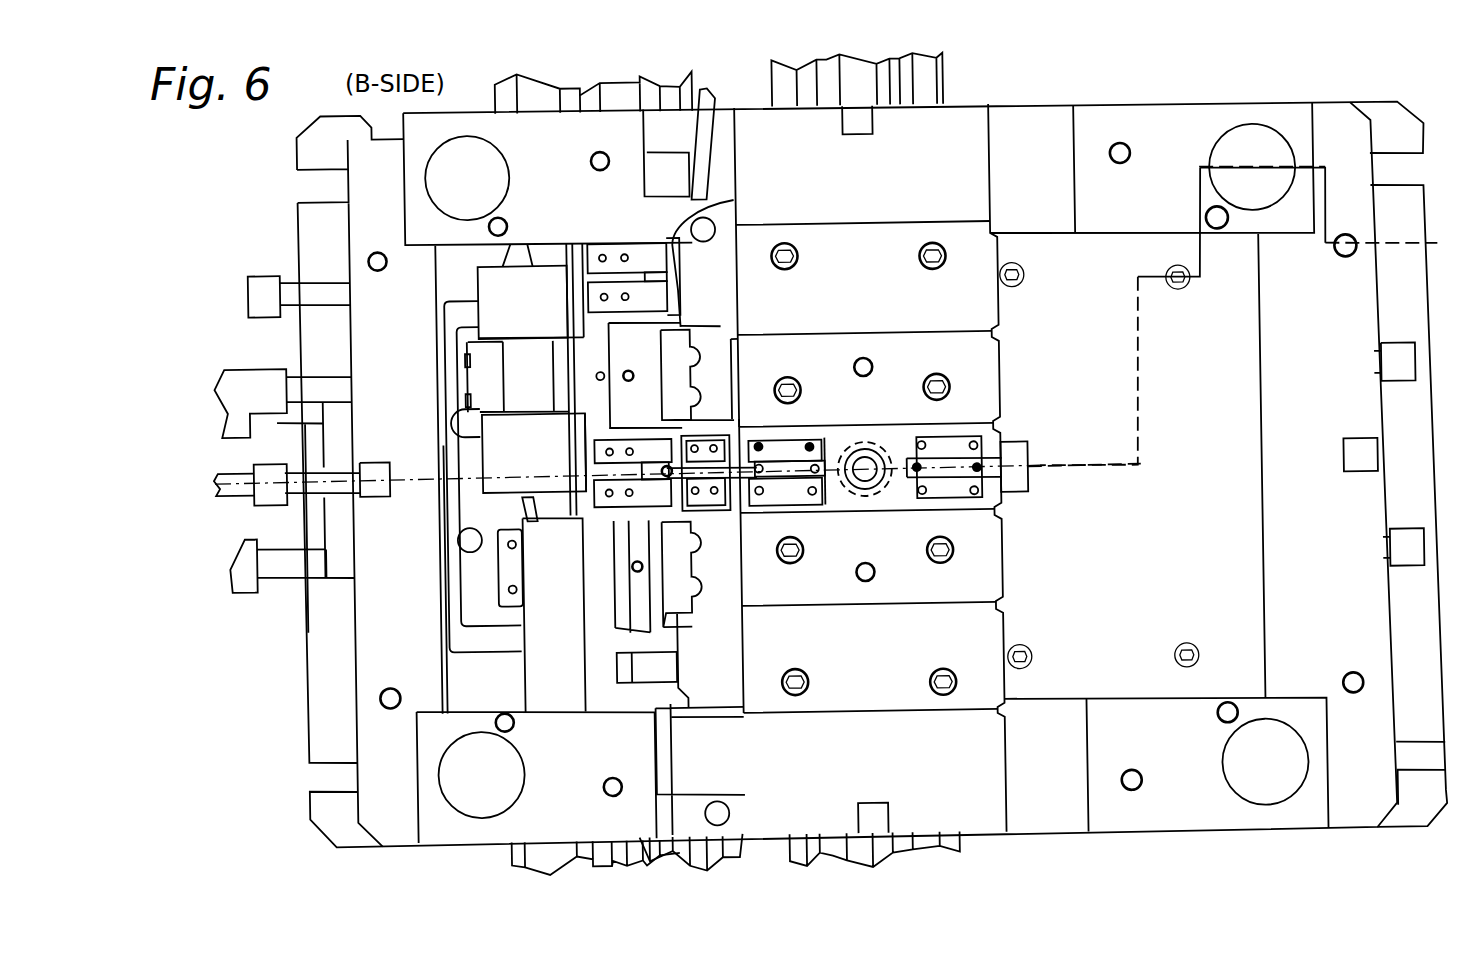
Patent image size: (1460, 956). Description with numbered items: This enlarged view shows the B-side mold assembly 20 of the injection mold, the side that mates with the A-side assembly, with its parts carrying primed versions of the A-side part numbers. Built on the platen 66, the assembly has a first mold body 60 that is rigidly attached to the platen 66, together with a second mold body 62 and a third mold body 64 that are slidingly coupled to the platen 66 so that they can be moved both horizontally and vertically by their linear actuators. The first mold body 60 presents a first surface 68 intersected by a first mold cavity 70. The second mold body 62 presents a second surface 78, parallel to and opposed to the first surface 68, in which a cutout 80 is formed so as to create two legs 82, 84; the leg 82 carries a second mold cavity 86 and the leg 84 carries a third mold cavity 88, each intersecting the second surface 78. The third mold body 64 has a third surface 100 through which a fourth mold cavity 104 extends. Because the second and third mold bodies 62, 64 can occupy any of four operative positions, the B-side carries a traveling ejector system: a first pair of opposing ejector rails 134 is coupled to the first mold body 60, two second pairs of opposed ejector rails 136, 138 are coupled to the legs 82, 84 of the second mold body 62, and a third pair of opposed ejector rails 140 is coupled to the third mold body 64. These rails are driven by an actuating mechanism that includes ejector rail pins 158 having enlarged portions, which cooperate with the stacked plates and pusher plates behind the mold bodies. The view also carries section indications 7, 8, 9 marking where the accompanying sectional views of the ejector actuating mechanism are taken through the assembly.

The B-side mold assembly 20 is at (1163, 85).
The section line 7- 7 is at (1442, 253).
The section line 8- 8 is at (676, 347).
The section line 9- 9 is at (612, 207).
The first mold body 60 is at (826, 598).
The second mold body 62 is at (578, 345).
The third mold body 64 is at (722, 505).
The platen 66 is at (345, 815).
The first surface 68 is at (733, 493).
The first mold cavity 70 is at (770, 445).
The second surface 78 is at (681, 296).
The cutout 80 is at (662, 329).
The leg 82 is at (580, 520).
The leg 84 is at (681, 227).
The second mold cavity 86 is at (663, 466).
The third mold cavity 88 is at (674, 272).
The third surface 100 is at (730, 453).
The fourth mold cavity 104 is at (734, 416).
The first pair of opposing ejector rails 134 is at (862, 440).
The second pair of opposed ejector rails 136 is at (526, 498).
The second pair of opposed ejector rails 138 is at (595, 288).
The third pair of opposed ejector rails 140 is at (709, 433).
The ejector rail pins 158 is at (768, 466).